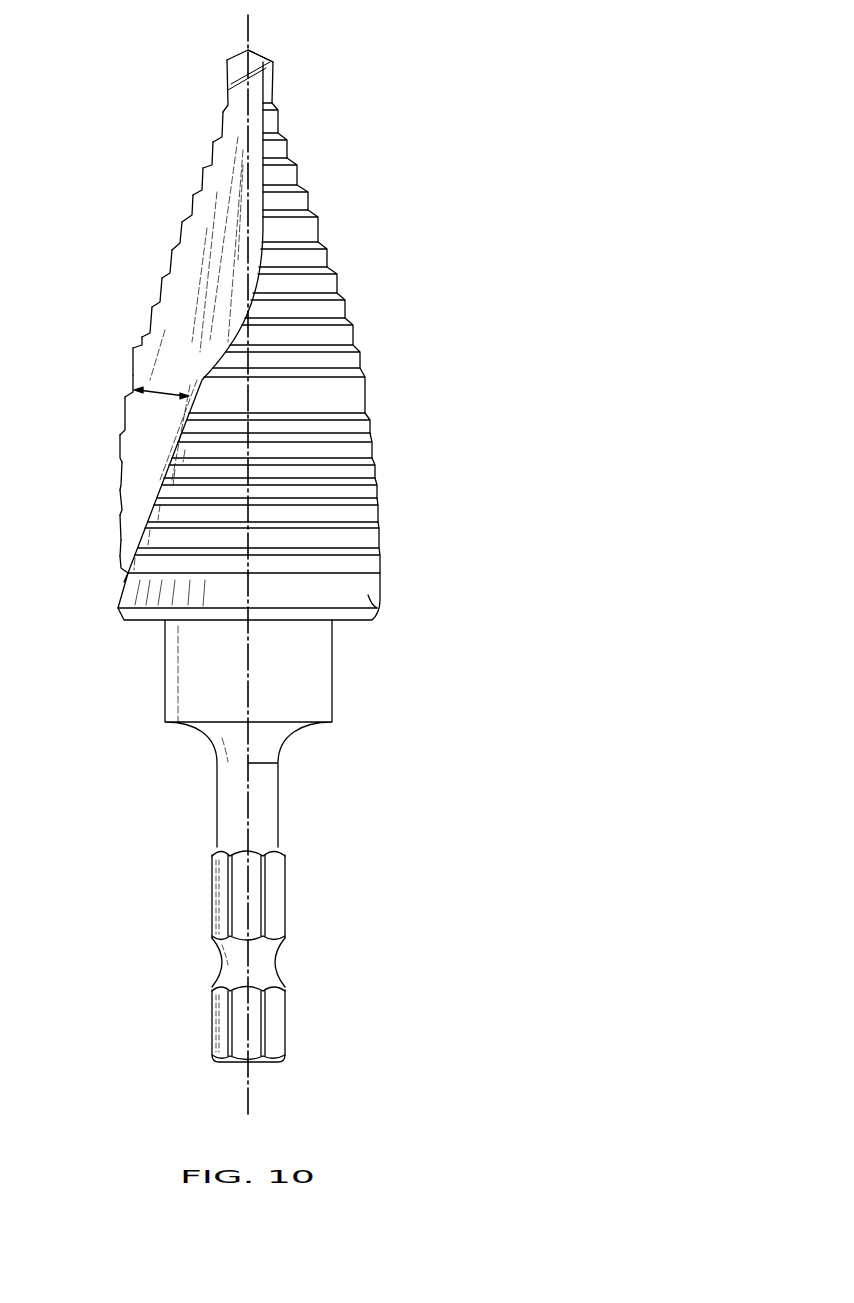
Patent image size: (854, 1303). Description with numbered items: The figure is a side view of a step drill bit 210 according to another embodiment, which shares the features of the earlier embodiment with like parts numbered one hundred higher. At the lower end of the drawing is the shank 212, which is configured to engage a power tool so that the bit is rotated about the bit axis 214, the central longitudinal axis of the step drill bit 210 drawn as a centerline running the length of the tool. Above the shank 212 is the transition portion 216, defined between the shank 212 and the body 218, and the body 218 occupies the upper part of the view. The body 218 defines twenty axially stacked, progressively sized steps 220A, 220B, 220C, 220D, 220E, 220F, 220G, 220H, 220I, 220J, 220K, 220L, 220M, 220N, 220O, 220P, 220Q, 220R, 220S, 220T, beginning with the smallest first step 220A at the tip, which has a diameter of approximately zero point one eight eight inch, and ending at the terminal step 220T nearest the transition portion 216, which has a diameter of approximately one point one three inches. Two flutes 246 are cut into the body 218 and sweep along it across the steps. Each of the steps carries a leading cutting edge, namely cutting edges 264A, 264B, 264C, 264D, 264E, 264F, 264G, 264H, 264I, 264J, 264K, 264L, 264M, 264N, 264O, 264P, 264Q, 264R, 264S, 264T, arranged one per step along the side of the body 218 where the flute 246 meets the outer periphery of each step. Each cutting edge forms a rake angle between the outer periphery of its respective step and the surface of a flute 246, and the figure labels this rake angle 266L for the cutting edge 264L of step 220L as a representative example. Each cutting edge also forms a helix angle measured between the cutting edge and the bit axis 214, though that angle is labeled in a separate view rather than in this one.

The step drill bit 210 is at (482, 124).
The shank 212 is at (287, 918).
The bit axis 214 is at (250, 1090).
The transition portion 216 is at (322, 667).
The body 218 is at (484, 303).
The first step 220A is at (273, 75).
The step 220B is at (279, 120).
The step 220C is at (288, 147).
The step 220D is at (298, 173).
The step 220E is at (309, 200).
The step 220F is at (319, 228).
The step 220G is at (328, 255).
The step 220H is at (338, 282).
The step 220I is at (346, 308).
The step 220J is at (354, 335).
The step 220K is at (361, 362).
The step 220L is at (366, 392).
The step 220M is at (371, 425).
The step 220N is at (373, 450).
The step 220O is at (376, 472).
The step 220P is at (378, 492).
The step 220Q is at (379, 515).
The step 220R is at (380, 540).
The step 220S is at (381, 565).
The terminal step 220T is at (381, 592).
The flute 246 is at (237, 100).
The leading cutting edge 264A is at (229, 100).
The leading cutting edge 264B is at (223, 127).
The leading cutting edge 264C is at (213, 155).
The leading cutting edge 264D is at (203, 183).
The leading cutting edge 264E is at (193, 210).
The leading cutting edge 264F is at (182, 238).
The leading cutting edge 264G is at (172, 263).
The leading cutting edge 264H is at (162, 290).
The leading cutting edge 264I is at (152, 317).
The leading cutting edge 264J is at (142, 343).
The leading cutting edge 264K is at (133, 370).
The leading cutting edge 264L is at (132, 396).
The leading cutting edge 264M is at (125, 425).
The leading cutting edge 264N is at (120, 450).
The leading cutting edge 264O is at (121, 476).
The leading cutting edge 264P is at (120, 496).
The leading cutting edge 264Q is at (121, 519).
The leading cutting edge 264R is at (120, 545).
The leading cutting edge 264S is at (121, 569).
The leading cutting edge 264T is at (119, 600).
The rake angle 266L is at (169, 390).